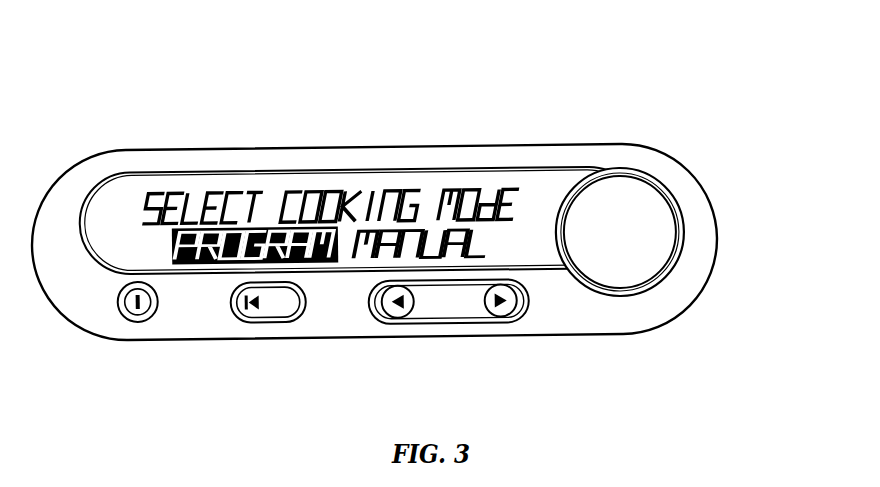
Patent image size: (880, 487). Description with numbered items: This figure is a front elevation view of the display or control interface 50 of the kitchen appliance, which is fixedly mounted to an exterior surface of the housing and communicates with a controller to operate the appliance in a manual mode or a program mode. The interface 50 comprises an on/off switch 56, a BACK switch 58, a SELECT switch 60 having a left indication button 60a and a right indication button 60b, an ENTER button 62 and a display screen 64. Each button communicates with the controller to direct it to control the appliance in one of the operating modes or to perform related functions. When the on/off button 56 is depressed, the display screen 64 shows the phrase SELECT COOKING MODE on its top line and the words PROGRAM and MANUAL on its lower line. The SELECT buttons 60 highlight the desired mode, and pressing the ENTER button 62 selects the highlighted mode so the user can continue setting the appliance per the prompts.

The display or control interface 50 is at (666, 106).
The display screen 64 is at (540, 187).
The ENTER button 62 is at (665, 230).
The on/off switch 56 is at (143, 320).
The BACK switch 58 is at (268, 318).
The SELECT switch 60 is at (463, 343).
The left indication button 60a is at (395, 312).
The right indication button 60b is at (508, 312).